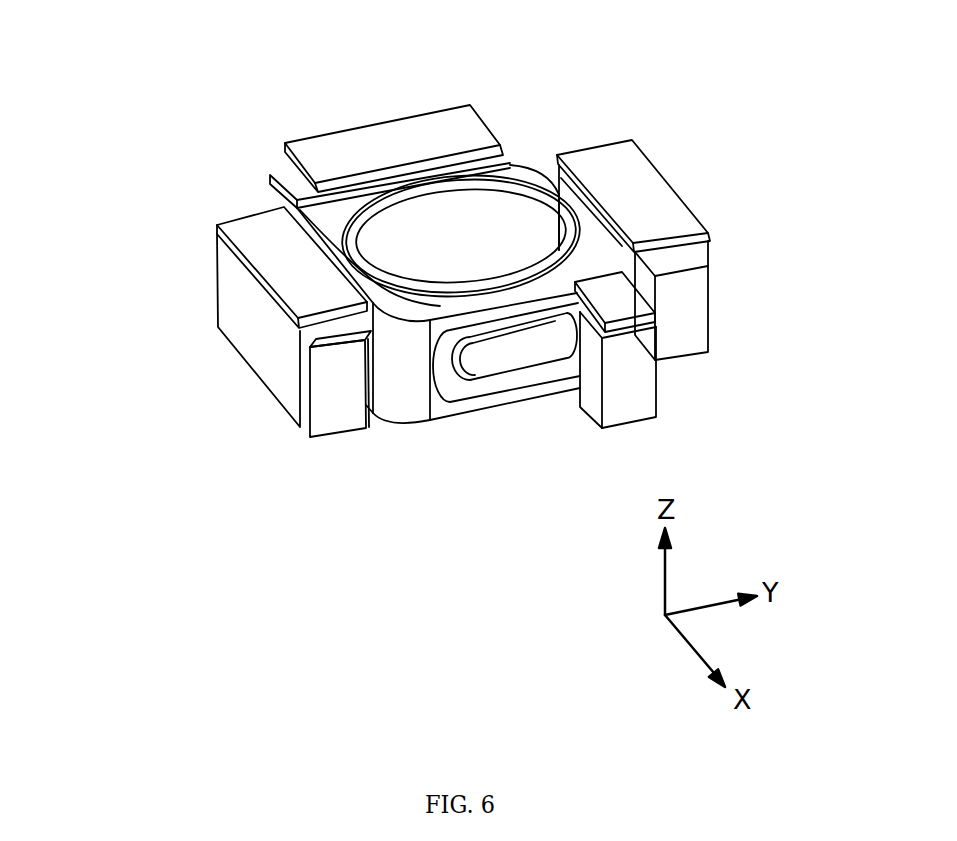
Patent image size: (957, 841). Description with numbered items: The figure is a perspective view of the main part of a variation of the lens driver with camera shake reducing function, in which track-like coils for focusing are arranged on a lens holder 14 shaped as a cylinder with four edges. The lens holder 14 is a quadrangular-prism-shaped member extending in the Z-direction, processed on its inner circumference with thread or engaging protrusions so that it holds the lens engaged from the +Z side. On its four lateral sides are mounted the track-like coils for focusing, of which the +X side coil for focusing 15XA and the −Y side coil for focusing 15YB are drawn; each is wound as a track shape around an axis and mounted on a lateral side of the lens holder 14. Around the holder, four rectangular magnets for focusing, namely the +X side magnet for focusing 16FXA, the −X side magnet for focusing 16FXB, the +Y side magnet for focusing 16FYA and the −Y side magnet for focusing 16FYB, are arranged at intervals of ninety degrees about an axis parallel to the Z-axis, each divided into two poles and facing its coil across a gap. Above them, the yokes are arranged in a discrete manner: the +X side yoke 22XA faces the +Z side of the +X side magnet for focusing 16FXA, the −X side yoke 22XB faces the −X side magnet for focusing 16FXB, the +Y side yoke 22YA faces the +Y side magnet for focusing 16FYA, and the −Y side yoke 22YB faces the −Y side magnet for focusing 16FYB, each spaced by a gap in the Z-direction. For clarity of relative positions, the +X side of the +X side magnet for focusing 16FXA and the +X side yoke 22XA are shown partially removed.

The lens holder 14 is at (524, 178).
The −X side yoke 22XB is at (400, 135).
The +Y side yoke 22YA is at (612, 170).
The −Y side yoke 22YB is at (268, 252).
The +X side yoke 22XA is at (635, 325).
The −X side magnet for focusing 16FXB is at (290, 182).
The +Y side magnet for focusing 16FYA is at (687, 302).
The −Y side magnet for focusing 16FYB is at (262, 328).
The +X side magnet for focusing 16FXA is at (633, 403).
The −Y side coil for focusing 15YB is at (348, 315).
The +X side coil for focusing 15XA is at (484, 396).